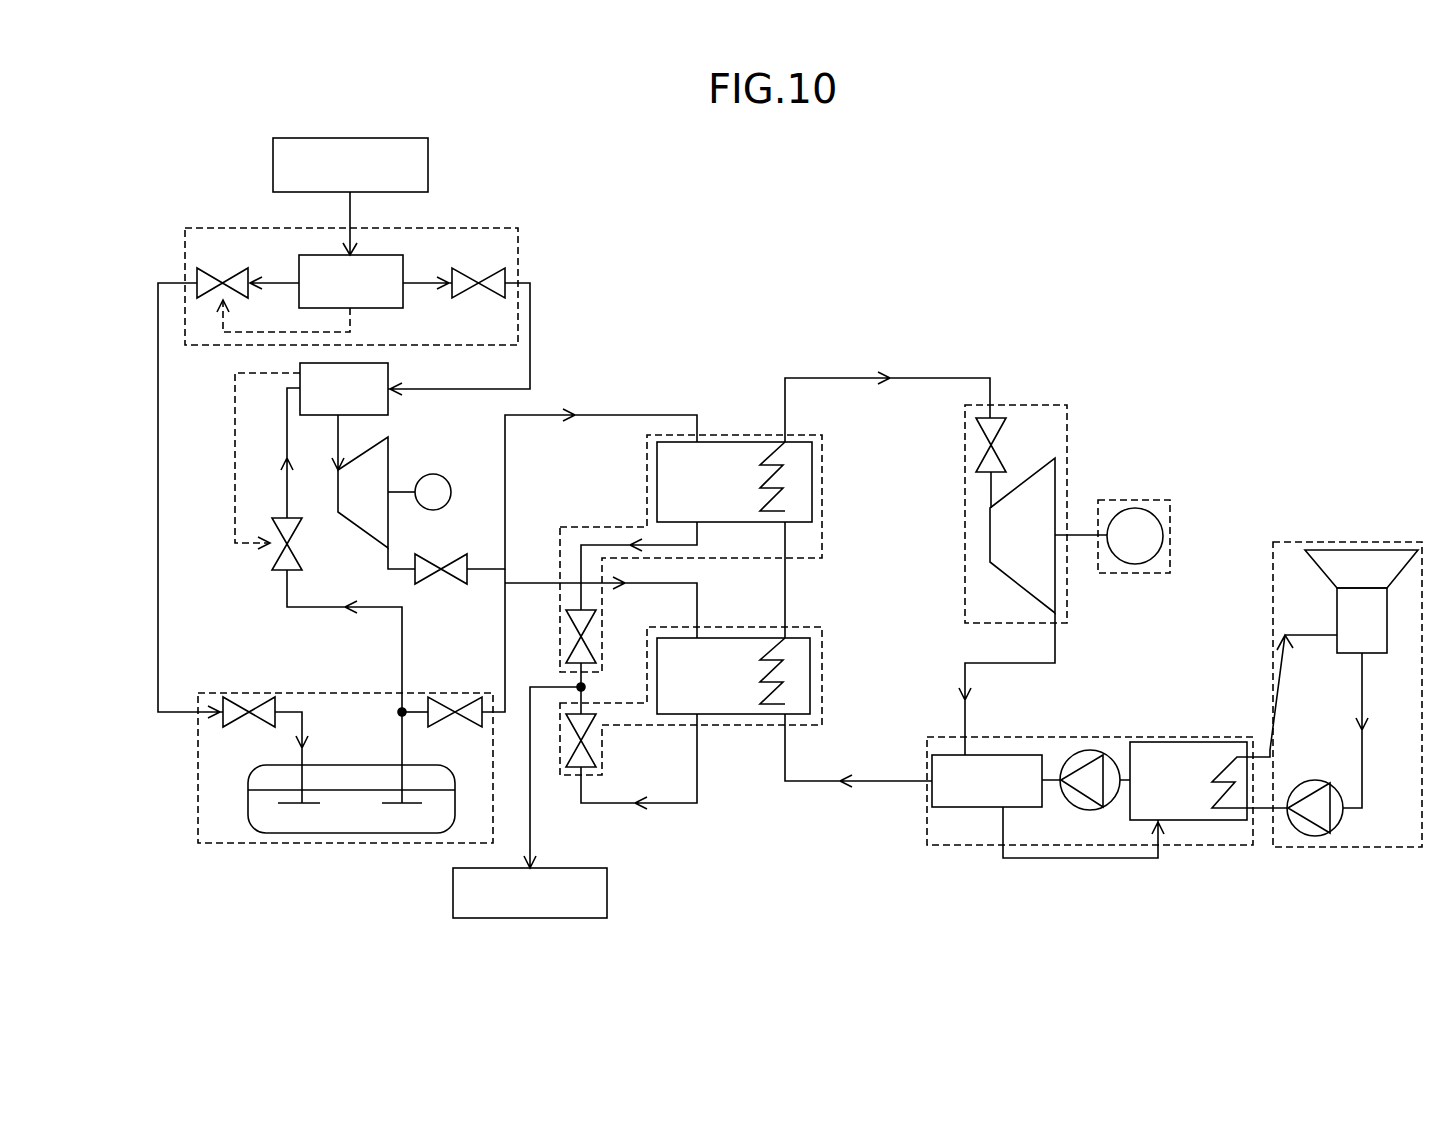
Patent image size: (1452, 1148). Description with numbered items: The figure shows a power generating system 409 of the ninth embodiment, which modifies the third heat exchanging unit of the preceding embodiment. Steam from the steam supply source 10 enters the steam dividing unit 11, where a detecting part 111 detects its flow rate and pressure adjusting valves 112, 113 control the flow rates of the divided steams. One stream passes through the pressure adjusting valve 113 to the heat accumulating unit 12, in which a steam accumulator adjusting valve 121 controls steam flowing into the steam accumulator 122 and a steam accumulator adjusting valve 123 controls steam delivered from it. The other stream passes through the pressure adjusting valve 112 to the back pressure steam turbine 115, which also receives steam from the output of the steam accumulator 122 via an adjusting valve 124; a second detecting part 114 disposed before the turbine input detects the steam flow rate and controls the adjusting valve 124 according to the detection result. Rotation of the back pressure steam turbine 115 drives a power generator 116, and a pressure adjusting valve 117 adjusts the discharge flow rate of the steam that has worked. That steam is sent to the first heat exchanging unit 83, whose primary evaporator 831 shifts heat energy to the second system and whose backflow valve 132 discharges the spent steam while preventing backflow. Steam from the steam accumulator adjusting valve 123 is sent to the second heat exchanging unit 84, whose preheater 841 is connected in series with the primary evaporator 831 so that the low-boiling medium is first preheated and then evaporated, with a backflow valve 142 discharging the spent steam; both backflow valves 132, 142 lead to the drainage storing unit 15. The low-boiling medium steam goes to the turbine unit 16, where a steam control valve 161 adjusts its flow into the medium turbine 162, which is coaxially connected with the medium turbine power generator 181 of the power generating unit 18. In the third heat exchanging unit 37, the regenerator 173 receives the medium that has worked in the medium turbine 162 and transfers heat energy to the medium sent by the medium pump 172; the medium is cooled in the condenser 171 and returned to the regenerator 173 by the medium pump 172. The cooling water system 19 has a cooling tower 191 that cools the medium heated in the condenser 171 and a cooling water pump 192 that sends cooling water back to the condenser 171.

The steam supply source 10 is at (430, 165).
The steam dividing unit 11 is at (567, 213).
The detecting part 111 is at (405, 264).
The pressure adjusting valve 112 is at (505, 270).
The pressure adjusting valve 113 is at (199, 266).
The second detecting part 114 is at (390, 405).
The back pressure steam turbine 115 is at (370, 540).
The power generator 116 is at (435, 470).
The pressure adjusting valve 117 is at (452, 583).
The heat accumulating unit 12 is at (191, 868).
The steam accumulator adjusting valve 121 is at (270, 698).
The steam accumulator 122 is at (383, 836).
The steam accumulator adjusting valve 123 is at (437, 698).
The adjusting valve 124 is at (270, 570).
The drainage storing unit 15 is at (608, 892).
The backflow valve 132 is at (598, 612).
The backflow valve 142 is at (598, 766).
The first heat exchanging unit 83 is at (746, 426).
The primary evaporator 831 is at (812, 476).
The second heat exchanging unit 84 is at (753, 619).
The preheater 841 is at (810, 676).
The turbine unit 16 is at (1056, 403).
The steam control valve 161 is at (975, 472).
The medium turbine 162 is at (990, 562).
The power generating unit 18 is at (1201, 523).
The medium turbine power generator 181 is at (1130, 508).
The third heat exchanging unit 37 is at (1152, 728).
The condenser 171 is at (1207, 740).
The medium pump 172 is at (1082, 750).
The regenerator 173 is at (1003, 752).
The cooling water system 19 is at (1411, 536).
The cooling tower 191 is at (1337, 604).
The cooling water pump 192 is at (1318, 780).
The power generating system 409 is at (882, 896).